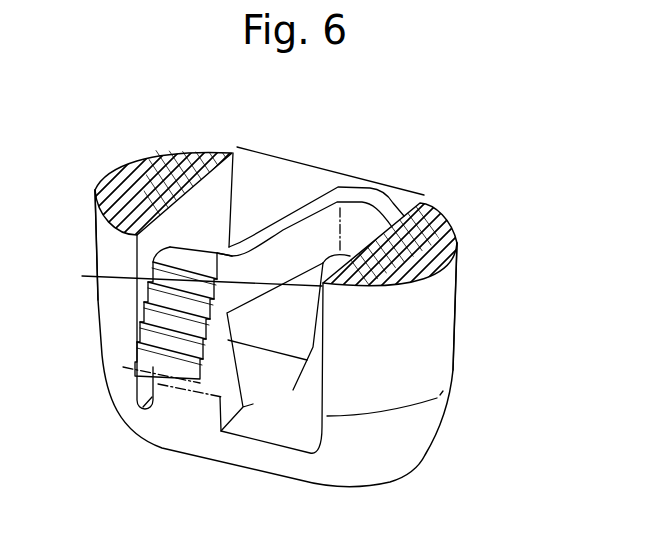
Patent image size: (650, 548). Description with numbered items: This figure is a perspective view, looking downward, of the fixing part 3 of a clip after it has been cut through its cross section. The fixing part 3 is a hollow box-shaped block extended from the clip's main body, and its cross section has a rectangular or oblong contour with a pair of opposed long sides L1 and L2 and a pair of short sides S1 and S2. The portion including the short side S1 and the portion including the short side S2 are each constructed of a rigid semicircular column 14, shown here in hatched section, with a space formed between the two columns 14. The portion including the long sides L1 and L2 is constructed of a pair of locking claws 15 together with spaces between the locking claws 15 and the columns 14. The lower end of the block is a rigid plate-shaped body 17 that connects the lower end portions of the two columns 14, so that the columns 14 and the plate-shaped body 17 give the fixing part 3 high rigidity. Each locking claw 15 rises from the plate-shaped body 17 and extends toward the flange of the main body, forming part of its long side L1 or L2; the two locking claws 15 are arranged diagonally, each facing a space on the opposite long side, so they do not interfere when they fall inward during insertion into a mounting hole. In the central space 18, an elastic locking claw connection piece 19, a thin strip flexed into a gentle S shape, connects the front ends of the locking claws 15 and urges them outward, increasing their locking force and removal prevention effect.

The fixing part 3 is at (547, 262).
The rigid semicircular column 14 is at (95, 192).
The locking claw 15 is at (367, 195).
The plate-shaped body 17 is at (290, 411).
The space 18 is at (242, 207).
The locking claw connection piece 19 is at (288, 208).
The long side L1 is at (330, 171).
The long side L2 is at (96, 276).
The short side S1 is at (142, 166).
The short side S2 is at (455, 250).